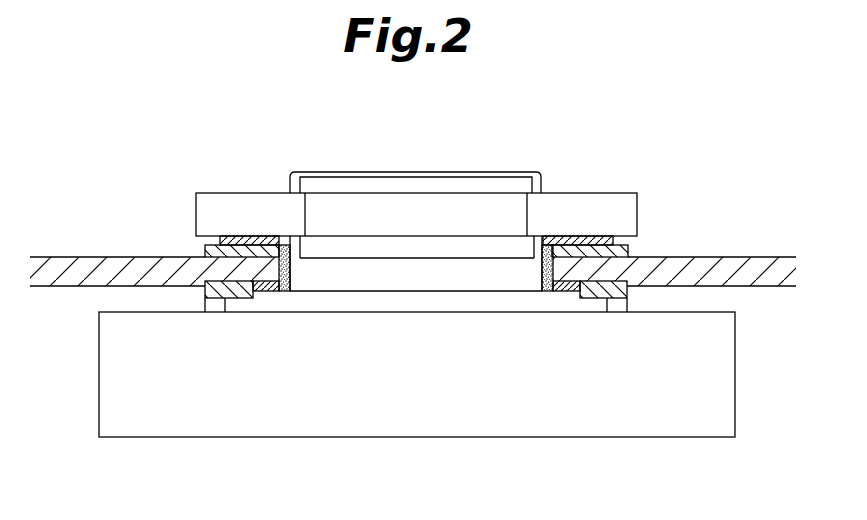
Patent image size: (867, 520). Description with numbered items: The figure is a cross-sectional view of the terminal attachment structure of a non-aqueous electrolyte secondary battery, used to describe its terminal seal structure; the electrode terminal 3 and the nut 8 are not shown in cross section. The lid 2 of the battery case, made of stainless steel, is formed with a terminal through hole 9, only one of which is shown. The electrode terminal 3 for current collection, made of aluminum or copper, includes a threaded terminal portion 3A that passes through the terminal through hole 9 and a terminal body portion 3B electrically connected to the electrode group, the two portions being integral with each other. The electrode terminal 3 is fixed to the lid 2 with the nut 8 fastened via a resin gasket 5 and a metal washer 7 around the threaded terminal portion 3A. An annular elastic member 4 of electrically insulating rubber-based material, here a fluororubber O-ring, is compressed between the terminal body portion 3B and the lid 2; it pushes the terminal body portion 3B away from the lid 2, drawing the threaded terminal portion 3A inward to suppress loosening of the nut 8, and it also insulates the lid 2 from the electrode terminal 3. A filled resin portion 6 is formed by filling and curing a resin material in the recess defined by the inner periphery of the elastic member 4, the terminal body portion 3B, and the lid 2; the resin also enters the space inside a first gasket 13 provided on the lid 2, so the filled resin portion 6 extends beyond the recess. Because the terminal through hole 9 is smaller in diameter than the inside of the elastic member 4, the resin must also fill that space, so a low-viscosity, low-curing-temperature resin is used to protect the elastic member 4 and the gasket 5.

The lid 2 is at (773, 268).
The electrode terminal 3 is at (448, 406).
The threaded terminal portion 3A is at (492, 186).
The terminal body portion 3B is at (722, 371).
The elastic member 4 is at (260, 291).
The gasket 5 is at (215, 297).
The filled resin portion 6 is at (285, 291).
The metal washer 7 is at (569, 234).
The nut 8 is at (625, 210).
The terminal through hole 9 is at (290, 266).
The first gasket 13 is at (630, 248).